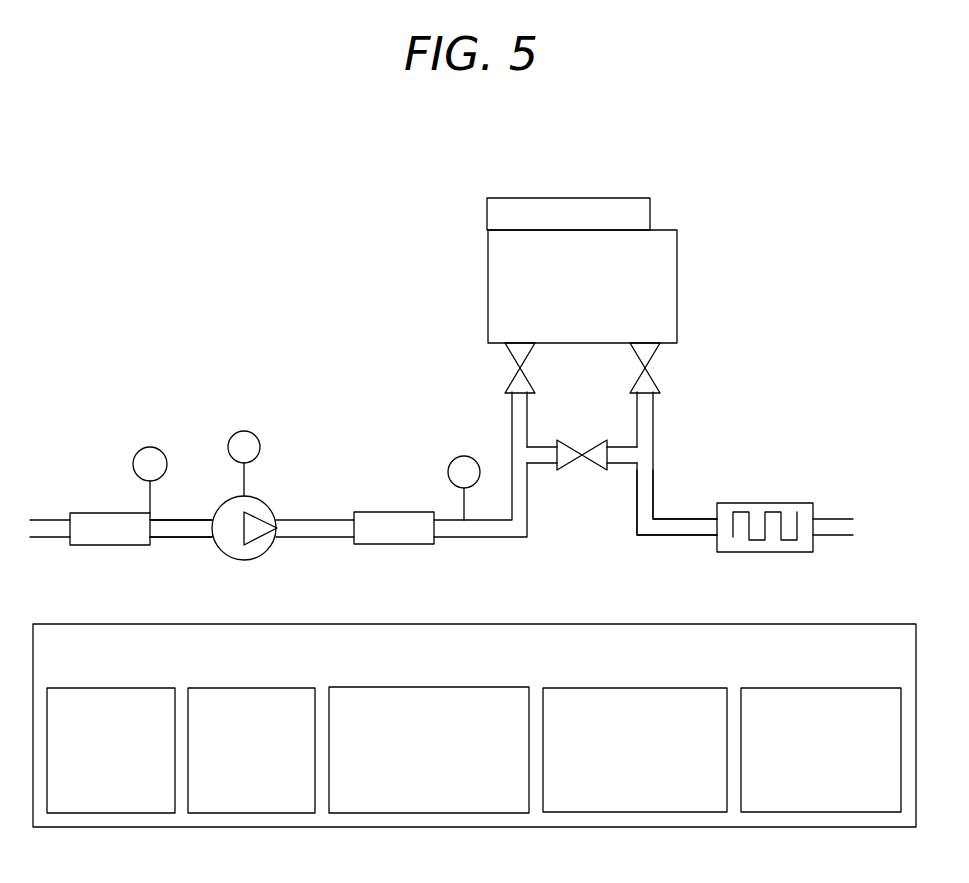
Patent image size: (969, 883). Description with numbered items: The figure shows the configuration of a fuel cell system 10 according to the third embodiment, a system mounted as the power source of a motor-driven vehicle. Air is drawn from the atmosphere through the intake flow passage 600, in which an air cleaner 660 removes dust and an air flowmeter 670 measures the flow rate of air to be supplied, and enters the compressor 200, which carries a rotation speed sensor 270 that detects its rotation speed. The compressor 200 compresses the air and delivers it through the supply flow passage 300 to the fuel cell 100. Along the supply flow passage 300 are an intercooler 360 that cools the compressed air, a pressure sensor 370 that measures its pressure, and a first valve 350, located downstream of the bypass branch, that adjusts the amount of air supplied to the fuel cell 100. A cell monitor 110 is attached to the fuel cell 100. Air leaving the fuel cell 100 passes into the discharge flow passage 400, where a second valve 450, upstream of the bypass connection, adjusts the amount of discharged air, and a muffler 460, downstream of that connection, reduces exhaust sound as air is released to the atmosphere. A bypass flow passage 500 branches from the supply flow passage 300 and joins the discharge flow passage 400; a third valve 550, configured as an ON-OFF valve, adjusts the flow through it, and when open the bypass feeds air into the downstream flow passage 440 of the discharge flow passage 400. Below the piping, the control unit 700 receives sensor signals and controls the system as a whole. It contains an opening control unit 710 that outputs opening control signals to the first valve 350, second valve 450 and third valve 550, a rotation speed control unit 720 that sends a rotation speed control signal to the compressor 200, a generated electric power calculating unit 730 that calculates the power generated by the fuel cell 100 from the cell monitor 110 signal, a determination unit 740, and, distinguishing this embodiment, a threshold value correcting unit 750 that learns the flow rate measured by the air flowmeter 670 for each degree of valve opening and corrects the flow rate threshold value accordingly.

The fuel cell system 10 is at (441, 372).
The fuel cell 100 is at (668, 229).
The cell monitor 110 is at (545, 197).
The compressor 200 is at (262, 498).
The rotation speed sensor 270 is at (244, 430).
The supply flow passage 300 is at (511, 408).
The first valve 350 is at (506, 362).
The intercooler 360 is at (392, 547).
The pressure sensor 370 is at (452, 459).
The discharge flow passage 400 is at (656, 415).
The downstream flow passage 440 is at (655, 478).
The second valve 450 is at (661, 360).
The muffler 460 is at (755, 553).
The bypass flow passage 500 is at (546, 464).
The third valve 550 is at (579, 439).
The intake flow passage 600 is at (178, 541).
The air cleaner 660 is at (108, 547).
The air flowmeter 670 is at (150, 446).
The control unit 700 is at (476, 729).
The opening control unit 710 is at (112, 688).
The rotation speed control unit 720 is at (252, 688).
The generated electric power calculating unit 730 is at (465, 688).
The determination unit 740 is at (663, 688).
The threshold value correcting unit 750 is at (838, 688).